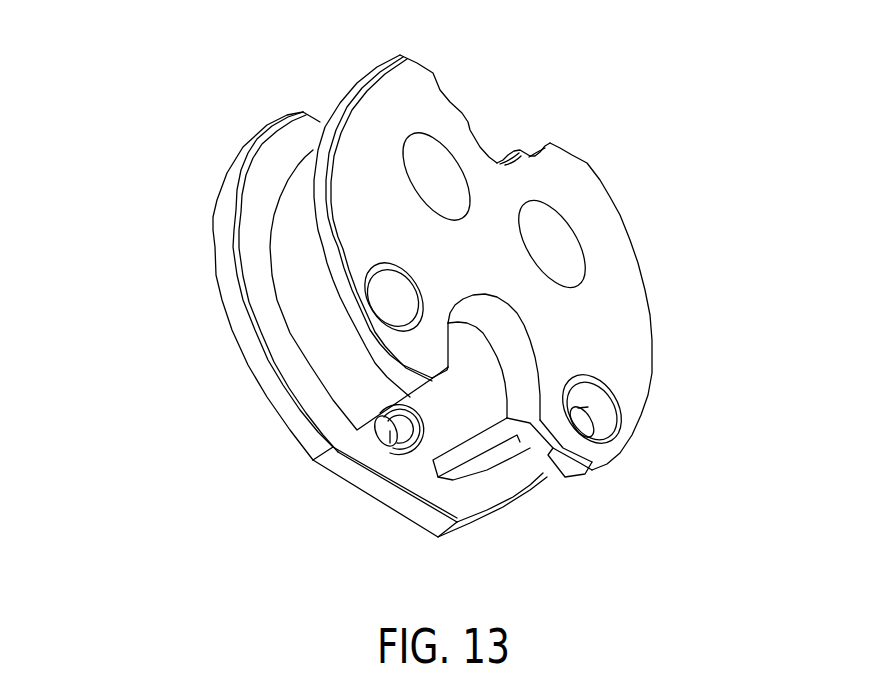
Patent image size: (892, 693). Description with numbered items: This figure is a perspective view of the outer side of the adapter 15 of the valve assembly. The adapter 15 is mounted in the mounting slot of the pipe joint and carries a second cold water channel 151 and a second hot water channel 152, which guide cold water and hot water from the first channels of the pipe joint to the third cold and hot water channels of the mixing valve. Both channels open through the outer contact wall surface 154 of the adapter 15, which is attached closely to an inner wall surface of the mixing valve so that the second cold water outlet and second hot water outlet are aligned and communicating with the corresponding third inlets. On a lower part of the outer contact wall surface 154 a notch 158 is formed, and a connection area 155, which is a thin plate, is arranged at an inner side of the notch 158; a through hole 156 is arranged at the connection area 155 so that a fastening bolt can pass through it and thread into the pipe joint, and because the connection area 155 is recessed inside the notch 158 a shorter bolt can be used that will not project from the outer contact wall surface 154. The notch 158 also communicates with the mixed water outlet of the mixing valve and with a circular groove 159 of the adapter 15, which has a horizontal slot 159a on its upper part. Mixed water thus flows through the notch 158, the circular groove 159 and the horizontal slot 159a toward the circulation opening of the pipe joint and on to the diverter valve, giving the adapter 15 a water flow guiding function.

The adapter 15 is at (612, 160).
The second cold water channel 151 is at (390, 119).
The second hot water channel 152 is at (615, 243).
The outer contact wall surface 154 is at (552, 340).
The connection area 155 is at (385, 519).
The through hole 156 is at (371, 479).
The notch 158 is at (585, 387).
The circular groove 159 is at (282, 286).
The horizontal slot 159a is at (524, 108).